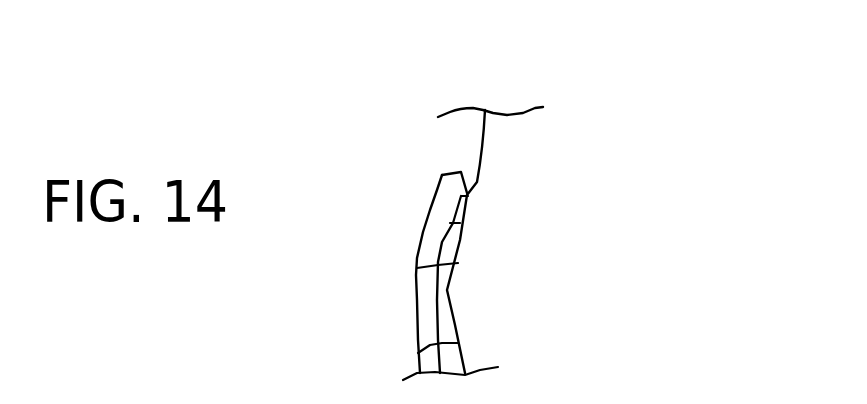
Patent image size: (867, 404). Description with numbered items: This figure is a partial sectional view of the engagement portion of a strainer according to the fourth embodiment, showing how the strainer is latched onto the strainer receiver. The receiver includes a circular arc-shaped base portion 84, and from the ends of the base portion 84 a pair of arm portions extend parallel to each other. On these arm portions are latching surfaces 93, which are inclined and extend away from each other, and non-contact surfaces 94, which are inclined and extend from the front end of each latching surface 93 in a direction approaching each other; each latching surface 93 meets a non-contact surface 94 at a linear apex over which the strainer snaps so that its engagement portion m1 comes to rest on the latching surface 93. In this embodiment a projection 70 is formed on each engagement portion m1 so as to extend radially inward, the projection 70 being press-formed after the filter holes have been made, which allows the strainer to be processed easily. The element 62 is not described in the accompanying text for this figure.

The support arm 62 is at (515, 122).
The base portion 84 is at (533, 189).
The engagement portion m1 is at (418, 203).
The projection 70 is at (468, 214).
The latching surface 93 is at (417, 266).
The non-contact surface 94 is at (418, 353).